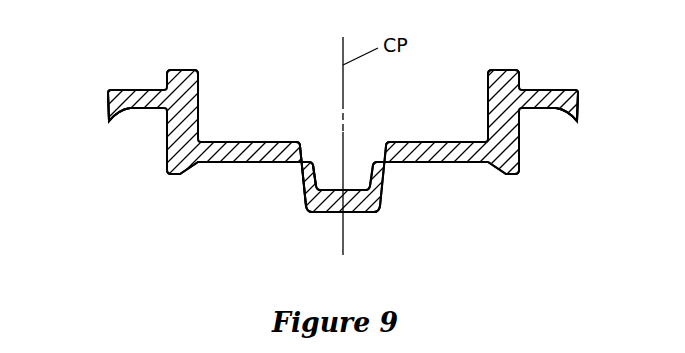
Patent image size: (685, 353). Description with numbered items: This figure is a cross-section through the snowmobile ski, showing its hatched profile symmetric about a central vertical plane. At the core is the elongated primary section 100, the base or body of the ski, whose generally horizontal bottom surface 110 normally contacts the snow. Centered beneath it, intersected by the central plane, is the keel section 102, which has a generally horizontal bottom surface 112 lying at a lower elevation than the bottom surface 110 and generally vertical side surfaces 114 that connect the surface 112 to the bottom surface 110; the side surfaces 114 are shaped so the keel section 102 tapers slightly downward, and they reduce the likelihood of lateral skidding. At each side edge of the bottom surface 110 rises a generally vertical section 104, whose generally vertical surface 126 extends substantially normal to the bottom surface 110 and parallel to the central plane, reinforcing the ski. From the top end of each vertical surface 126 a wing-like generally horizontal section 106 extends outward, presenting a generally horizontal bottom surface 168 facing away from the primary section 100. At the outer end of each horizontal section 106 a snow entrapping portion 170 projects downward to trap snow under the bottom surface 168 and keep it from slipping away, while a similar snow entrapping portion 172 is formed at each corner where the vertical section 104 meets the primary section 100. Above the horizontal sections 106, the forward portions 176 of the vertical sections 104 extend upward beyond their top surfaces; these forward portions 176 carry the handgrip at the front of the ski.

The primary section 100 is at (252, 165).
The keel section 102 is at (382, 195).
The generally vertical section 104 is at (200, 102).
The generally horizontal section 106 is at (138, 87).
The bottom surface 110 is at (278, 163).
The generally horizontal bottom surface 112 is at (352, 212).
The generally vertical side surface 114 is at (302, 192).
The generally vertical surface 126 is at (167, 140).
The generally horizontal bottom surface 168 is at (129, 109).
The snow entrapping portion 170 is at (107, 118).
The snow entrapping portion 172 is at (175, 175).
The forward portion 176 is at (181, 70).